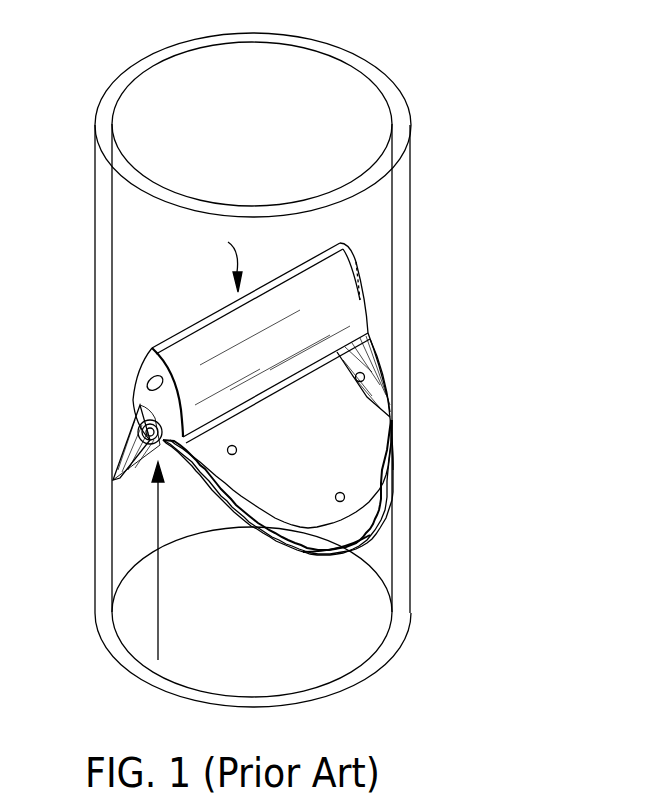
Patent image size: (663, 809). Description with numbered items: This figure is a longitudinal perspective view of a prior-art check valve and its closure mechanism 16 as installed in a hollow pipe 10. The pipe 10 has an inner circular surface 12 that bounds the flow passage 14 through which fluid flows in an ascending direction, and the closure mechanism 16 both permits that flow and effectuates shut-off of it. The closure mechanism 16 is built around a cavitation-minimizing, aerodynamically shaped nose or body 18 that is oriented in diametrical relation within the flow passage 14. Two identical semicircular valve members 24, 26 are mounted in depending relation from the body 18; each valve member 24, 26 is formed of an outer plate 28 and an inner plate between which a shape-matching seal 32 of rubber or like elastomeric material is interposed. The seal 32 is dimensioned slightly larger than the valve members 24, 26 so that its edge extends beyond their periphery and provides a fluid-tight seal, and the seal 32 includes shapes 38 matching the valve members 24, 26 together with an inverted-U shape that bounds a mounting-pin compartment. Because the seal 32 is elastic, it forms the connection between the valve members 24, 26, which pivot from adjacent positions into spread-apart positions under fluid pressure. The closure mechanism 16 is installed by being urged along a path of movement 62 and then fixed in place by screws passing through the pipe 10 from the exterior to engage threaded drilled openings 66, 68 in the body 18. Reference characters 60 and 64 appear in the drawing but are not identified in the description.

The hollow pipe 10 is at (172, 249).
The inner circular surface 12 is at (338, 76).
The flow passage 14 is at (266, 121).
The closure mechanism 16 is at (219, 263).
The body 18 is at (275, 343).
The valve member 24 is at (327, 413).
The valve member 26 is at (133, 480).
The outer plate 28 is at (320, 461).
The seal 32 is at (333, 560).
The seal shape 38 is at (277, 547).
The pipe lower rim 60 is at (323, 650).
The path of movement 62 is at (162, 653).
The hinge bracket 64 is at (147, 418).
The threaded drilled opening 66 is at (138, 372).
The threaded drilled opening 68 is at (363, 264).